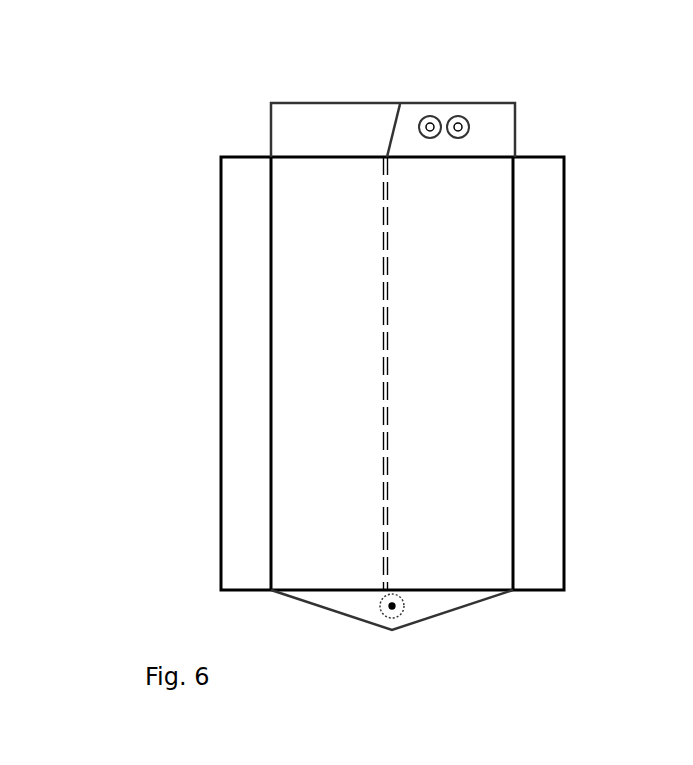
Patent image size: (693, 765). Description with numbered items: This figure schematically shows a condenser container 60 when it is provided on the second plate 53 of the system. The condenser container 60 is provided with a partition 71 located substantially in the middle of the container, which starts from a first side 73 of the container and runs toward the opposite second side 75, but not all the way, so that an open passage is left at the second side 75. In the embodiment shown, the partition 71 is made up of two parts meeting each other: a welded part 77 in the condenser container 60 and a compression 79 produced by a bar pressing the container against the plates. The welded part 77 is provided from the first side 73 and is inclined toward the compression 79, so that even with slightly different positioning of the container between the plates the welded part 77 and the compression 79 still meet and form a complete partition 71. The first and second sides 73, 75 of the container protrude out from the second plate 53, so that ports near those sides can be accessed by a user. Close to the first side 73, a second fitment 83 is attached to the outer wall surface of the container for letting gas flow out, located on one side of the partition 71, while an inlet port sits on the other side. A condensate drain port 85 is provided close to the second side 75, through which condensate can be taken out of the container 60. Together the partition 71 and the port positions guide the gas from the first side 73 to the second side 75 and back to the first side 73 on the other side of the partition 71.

The second plate 53 is at (219, 470).
The condenser container 60 is at (270, 372).
The partition 71 is at (418, 192).
The first side 73 is at (472, 103).
The second side 75 is at (458, 616).
The welded part 77 is at (387, 137).
The compression 79 is at (393, 345).
The second fitment 83 is at (433, 117).
The condensate drain port 85 is at (380, 608).